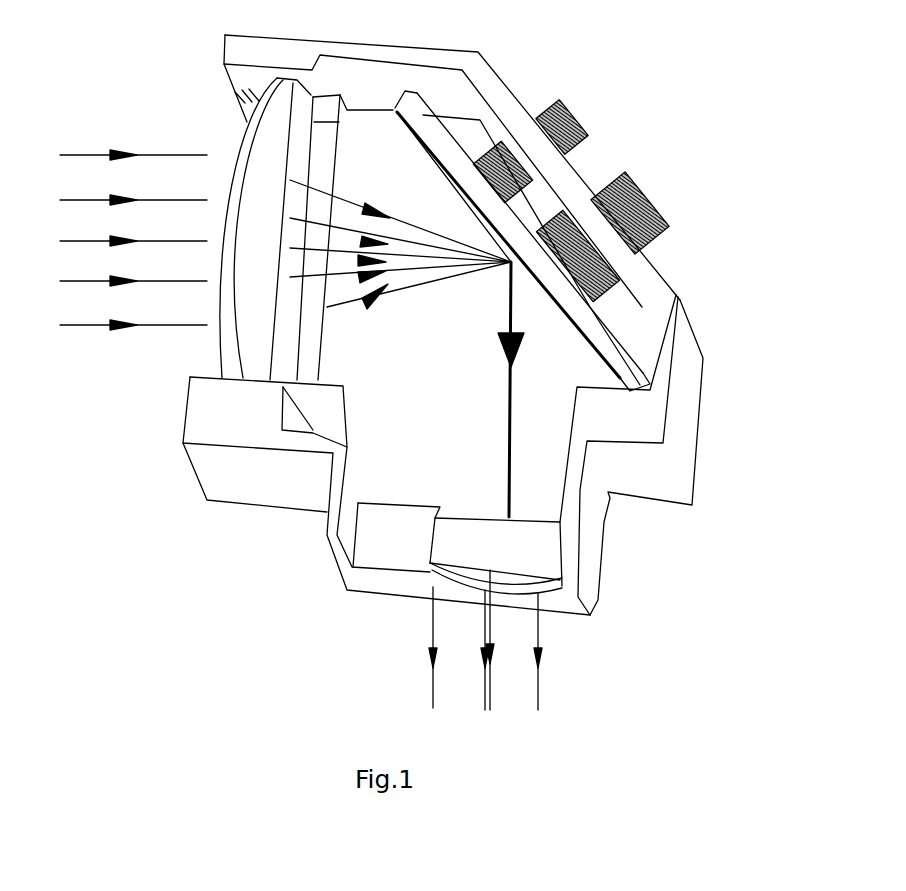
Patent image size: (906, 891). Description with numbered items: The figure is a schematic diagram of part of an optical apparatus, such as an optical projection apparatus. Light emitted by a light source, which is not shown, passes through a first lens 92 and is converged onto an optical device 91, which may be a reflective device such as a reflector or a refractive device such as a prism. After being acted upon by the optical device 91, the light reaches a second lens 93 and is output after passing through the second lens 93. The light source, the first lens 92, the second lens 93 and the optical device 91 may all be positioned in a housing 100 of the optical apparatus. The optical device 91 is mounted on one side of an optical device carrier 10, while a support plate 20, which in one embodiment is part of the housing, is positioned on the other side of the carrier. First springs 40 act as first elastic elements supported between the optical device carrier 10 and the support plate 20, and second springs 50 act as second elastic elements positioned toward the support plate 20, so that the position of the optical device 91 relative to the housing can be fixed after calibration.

The optical device carrier 10 is at (610, 357).
The support plate 20 is at (490, 90).
The first springs 40 is at (537, 170).
The second springs 50 is at (583, 118).
The optical device 91 is at (563, 327).
The first lens 92 is at (238, 157).
The second lens 93 is at (513, 533).
The housing 100 is at (610, 423).